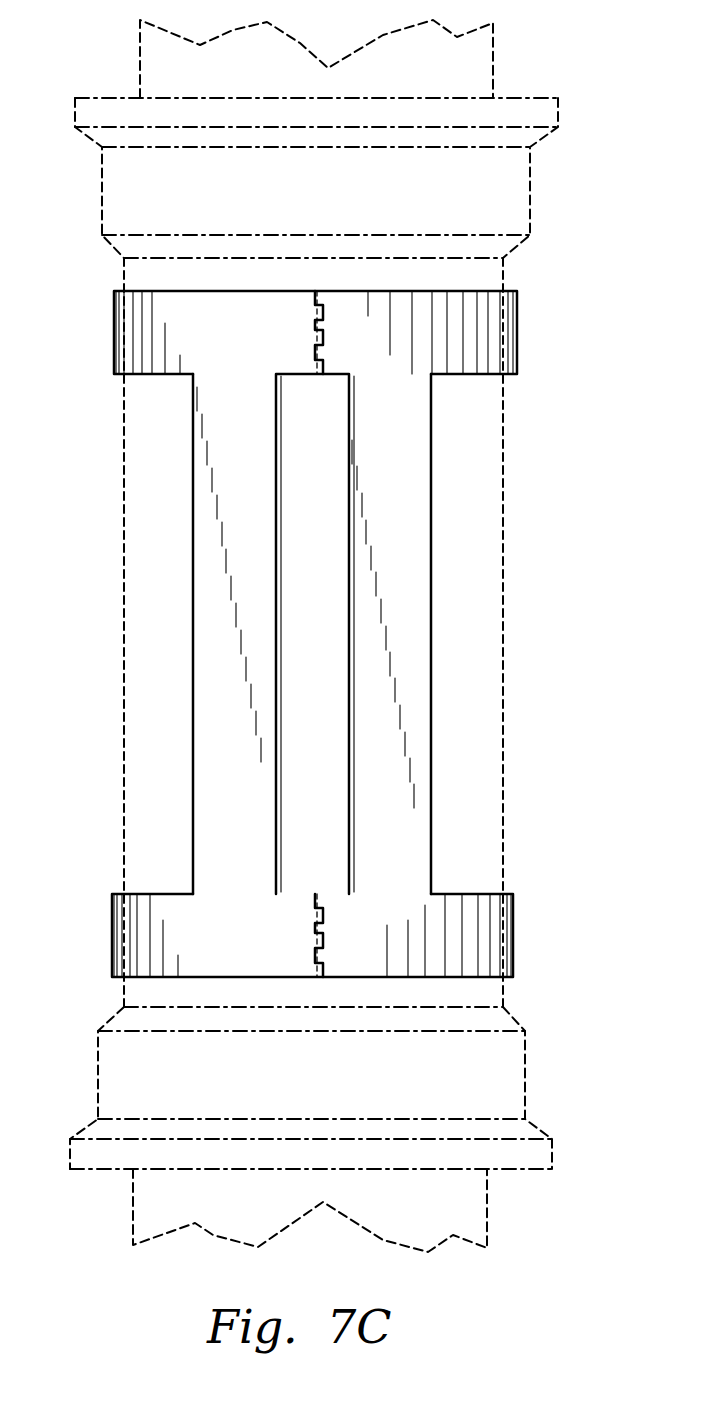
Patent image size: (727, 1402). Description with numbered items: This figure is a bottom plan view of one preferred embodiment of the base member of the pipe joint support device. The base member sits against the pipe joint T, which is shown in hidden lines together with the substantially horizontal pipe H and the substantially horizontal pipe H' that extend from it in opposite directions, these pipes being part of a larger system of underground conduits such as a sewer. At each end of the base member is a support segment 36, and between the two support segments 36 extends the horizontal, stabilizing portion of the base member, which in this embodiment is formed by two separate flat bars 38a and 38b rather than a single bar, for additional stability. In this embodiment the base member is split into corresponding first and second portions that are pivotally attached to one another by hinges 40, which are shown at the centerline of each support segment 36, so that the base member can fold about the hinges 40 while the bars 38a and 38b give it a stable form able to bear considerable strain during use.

The support segment 36 is at (497, 330).
The flat bar 38a is at (404, 582).
The flat bar 38b is at (222, 703).
The hinge 40 is at (316, 376).
The substantially horizontal pipe H is at (351, 139).
The substantially horizontal pipe H' is at (388, 1210).
The pipe joint T is at (526, 1068).